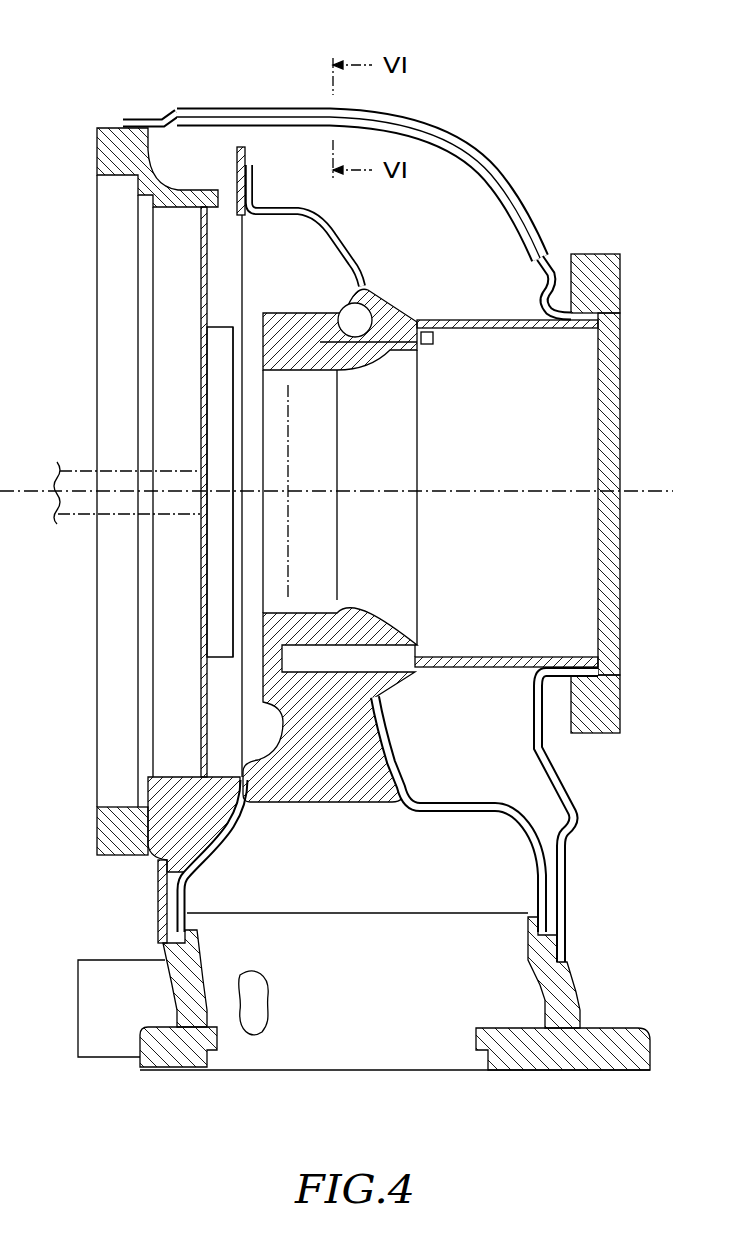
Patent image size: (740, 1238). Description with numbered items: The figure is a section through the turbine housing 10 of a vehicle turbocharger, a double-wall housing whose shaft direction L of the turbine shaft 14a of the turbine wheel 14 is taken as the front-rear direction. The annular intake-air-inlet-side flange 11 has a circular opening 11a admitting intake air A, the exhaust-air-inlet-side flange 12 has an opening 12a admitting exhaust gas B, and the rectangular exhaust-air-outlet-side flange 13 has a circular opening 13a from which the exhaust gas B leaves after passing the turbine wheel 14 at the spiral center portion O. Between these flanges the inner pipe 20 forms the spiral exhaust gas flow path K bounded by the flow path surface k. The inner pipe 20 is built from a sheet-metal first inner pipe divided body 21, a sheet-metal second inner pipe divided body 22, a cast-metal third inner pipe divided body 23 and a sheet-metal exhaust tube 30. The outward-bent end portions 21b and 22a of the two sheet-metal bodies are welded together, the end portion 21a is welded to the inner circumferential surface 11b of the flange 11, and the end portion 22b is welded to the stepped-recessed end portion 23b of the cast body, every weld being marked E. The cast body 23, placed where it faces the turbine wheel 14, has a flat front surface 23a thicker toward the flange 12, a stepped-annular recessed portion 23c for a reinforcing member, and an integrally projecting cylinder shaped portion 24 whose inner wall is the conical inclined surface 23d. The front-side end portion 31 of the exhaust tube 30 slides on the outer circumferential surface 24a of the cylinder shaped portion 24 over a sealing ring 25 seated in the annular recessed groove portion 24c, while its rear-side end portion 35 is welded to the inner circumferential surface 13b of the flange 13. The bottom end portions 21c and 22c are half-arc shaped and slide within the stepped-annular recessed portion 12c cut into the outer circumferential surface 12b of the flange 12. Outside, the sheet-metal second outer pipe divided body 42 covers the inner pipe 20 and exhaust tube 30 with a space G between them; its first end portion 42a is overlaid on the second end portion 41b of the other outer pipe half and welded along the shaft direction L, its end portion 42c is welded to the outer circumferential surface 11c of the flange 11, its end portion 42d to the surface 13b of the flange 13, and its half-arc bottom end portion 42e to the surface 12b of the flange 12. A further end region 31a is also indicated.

The turbine housing 10 is at (440, 86).
The intake-air-inlet-side flange 11 is at (88, 150).
The inlet 11a is at (108, 675).
The inner circumferential surface 11b is at (218, 200).
The outer circumferential surface 11c is at (97, 126).
The exhaust-air-inlet-side flange 12 is at (565, 1072).
The inlet 12a is at (293, 1072).
The outer circumferential surface 12b is at (576, 985).
The recessed portion 12c is at (567, 925).
The exhaust-air-outlet-side flange 13 is at (627, 272).
The outlet 13a is at (618, 426).
The inner circumferential surface 13b is at (618, 344).
The turbine wheel 14 is at (300, 455).
The turbine shaft 14a is at (105, 523).
The inner pipe 20 is at (503, 762).
The first inner pipe divided body 21 is at (237, 150).
The end portion 21a is at (225, 255).
The end portion 21b is at (240, 146).
The bottom end portion 21c is at (158, 914).
The second inner pipe divided body 22 is at (348, 245).
The end portion 22a is at (262, 210).
The end portion 22b is at (375, 285).
The bottom end portion 22c is at (553, 902).
The third inner pipe divided body 23 is at (340, 805).
The front surface 23a is at (265, 680).
The end portion 23b is at (348, 280).
The recessed portion 23c is at (265, 382).
The inclined surface 23d is at (395, 375).
The cylinder shaped portion 24 is at (335, 318).
The outer circumferential surface 24a is at (426, 320).
The recessed groove portion 24c is at (430, 352).
The sealing ring 25 is at (455, 315).
The exhaust tube 30 is at (508, 672).
The front-side end portion 31 is at (405, 675).
The plate end 31a is at (448, 336).
The rear-side end portion 35 is at (590, 655).
The second end portion 41b is at (266, 108).
The second outer pipe divided body 42 is at (472, 136).
The first end portion 42a is at (318, 104).
The end portion 42c is at (152, 116).
The end portion 42d is at (588, 262).
The bottom end portion 42e is at (568, 948).
The welded portion E is at (125, 126).
The exhaust gas flow path K is at (268, 277).
The flow path surface k is at (268, 305).
The space G is at (488, 235).
The intake air A is at (66, 429).
The exhaust gas B is at (638, 507).
The shaft direction L is at (22, 490).
The spiral center portion O is at (253, 498).